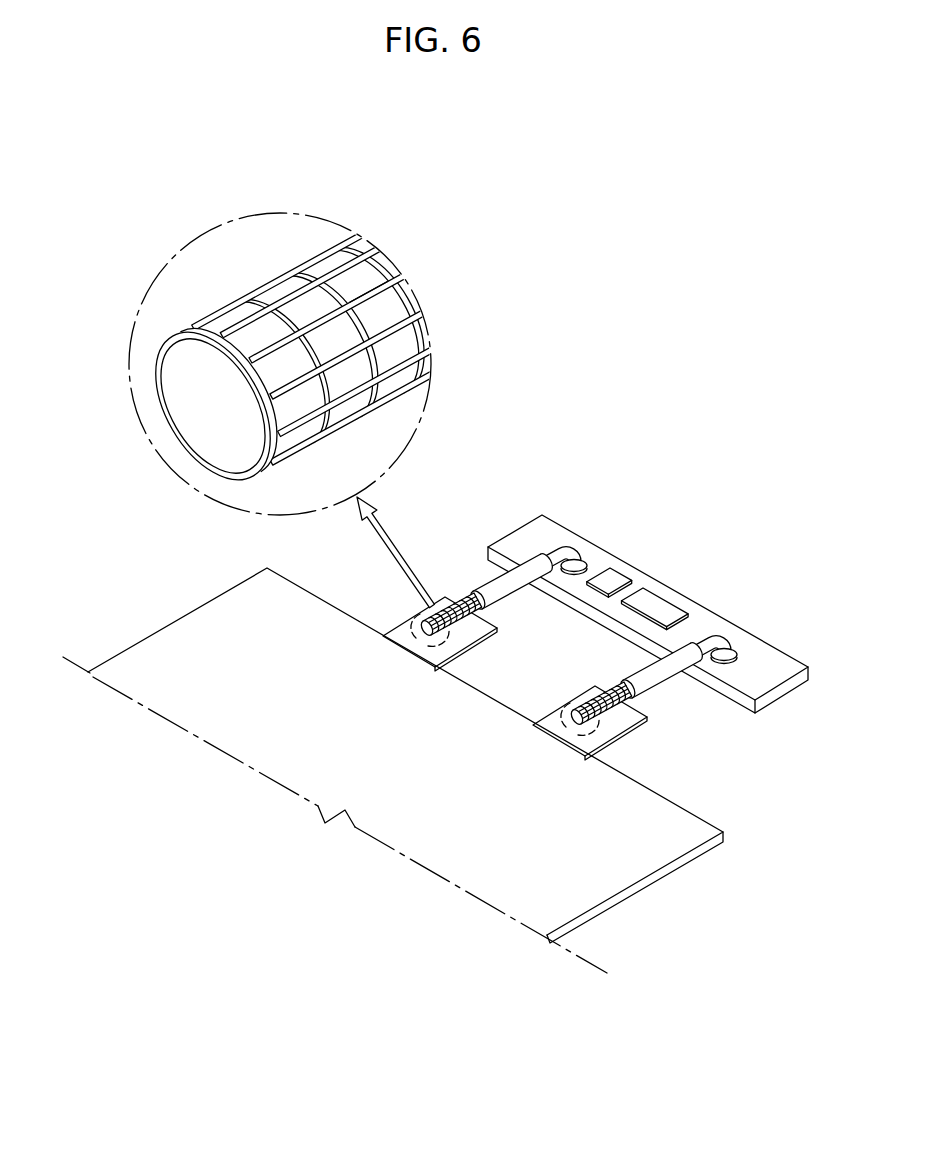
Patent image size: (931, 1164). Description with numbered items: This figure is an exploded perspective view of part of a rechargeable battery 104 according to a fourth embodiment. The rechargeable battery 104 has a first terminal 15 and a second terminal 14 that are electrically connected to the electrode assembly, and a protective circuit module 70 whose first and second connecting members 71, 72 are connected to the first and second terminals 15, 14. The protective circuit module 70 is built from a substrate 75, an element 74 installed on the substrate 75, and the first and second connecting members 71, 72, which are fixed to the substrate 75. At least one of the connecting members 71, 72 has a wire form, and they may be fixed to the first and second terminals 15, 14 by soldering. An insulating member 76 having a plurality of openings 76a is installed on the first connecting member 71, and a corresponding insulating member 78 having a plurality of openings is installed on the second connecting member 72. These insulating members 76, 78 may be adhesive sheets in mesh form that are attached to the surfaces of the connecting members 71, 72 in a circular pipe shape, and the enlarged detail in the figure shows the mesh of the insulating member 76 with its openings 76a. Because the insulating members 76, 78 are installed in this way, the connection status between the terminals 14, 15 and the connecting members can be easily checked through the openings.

The rechargeable battery 104 is at (192, 588).
The first terminal 15 is at (403, 625).
The second terminal 14 is at (608, 731).
The protective circuit module 70 is at (648, 614).
The first connecting member 71 is at (527, 571).
The second connecting member 72 is at (653, 709).
The element 74 is at (618, 580).
The substrate 75 is at (600, 559).
The insulating member 76 is at (325, 354).
The openings 76a is at (355, 306).
The insulating member 78 is at (613, 704).